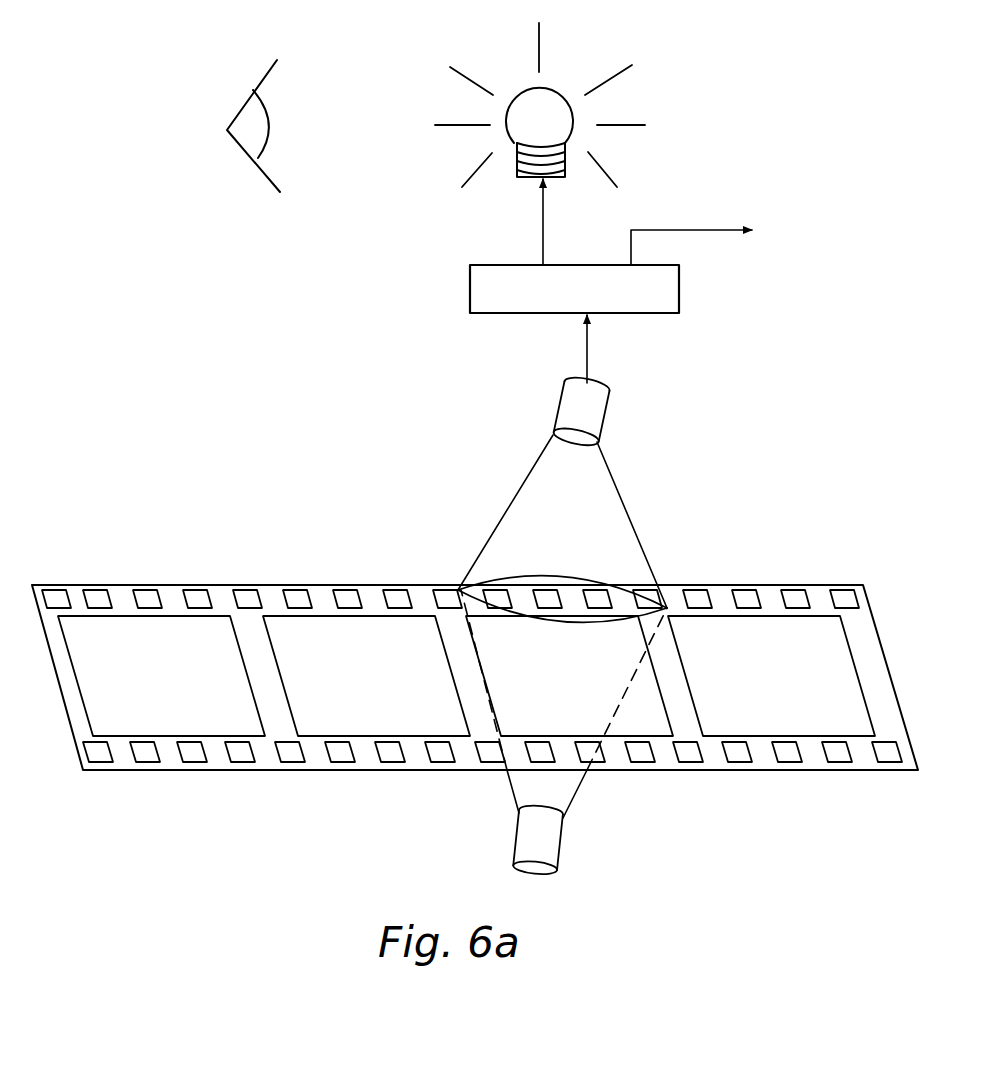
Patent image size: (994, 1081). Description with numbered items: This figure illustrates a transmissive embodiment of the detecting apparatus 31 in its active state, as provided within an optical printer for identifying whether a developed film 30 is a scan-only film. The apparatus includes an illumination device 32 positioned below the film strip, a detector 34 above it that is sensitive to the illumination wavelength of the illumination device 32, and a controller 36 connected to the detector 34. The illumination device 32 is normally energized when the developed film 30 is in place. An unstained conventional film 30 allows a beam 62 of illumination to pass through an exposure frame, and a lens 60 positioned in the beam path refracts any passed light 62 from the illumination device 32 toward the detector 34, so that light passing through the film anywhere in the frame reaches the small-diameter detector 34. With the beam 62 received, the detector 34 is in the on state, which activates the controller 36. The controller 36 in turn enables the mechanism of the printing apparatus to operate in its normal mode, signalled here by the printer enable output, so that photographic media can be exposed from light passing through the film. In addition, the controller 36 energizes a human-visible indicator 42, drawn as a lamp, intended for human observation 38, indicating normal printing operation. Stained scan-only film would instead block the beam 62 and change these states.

The developed film 30 is at (213, 748).
The detecting apparatus 31 is at (308, 361).
The illumination device 32 is at (548, 843).
The detector 34 is at (597, 404).
The controller 36 is at (487, 265).
The human observation 38 is at (243, 150).
The human-visible indicator 42 is at (528, 100).
The lens 60 is at (510, 575).
The beam of illumination 62 is at (538, 484).